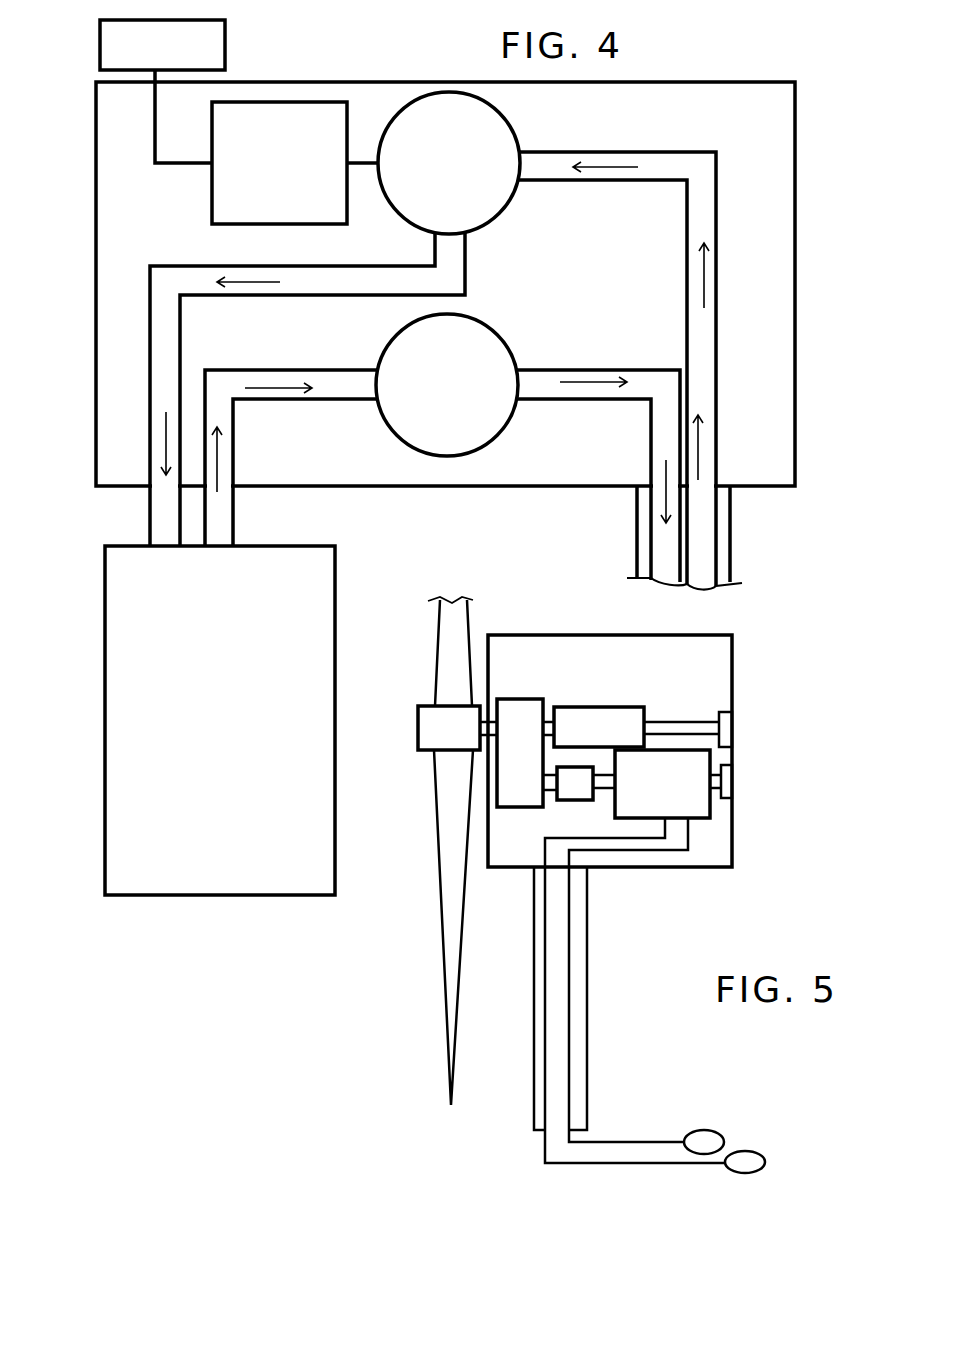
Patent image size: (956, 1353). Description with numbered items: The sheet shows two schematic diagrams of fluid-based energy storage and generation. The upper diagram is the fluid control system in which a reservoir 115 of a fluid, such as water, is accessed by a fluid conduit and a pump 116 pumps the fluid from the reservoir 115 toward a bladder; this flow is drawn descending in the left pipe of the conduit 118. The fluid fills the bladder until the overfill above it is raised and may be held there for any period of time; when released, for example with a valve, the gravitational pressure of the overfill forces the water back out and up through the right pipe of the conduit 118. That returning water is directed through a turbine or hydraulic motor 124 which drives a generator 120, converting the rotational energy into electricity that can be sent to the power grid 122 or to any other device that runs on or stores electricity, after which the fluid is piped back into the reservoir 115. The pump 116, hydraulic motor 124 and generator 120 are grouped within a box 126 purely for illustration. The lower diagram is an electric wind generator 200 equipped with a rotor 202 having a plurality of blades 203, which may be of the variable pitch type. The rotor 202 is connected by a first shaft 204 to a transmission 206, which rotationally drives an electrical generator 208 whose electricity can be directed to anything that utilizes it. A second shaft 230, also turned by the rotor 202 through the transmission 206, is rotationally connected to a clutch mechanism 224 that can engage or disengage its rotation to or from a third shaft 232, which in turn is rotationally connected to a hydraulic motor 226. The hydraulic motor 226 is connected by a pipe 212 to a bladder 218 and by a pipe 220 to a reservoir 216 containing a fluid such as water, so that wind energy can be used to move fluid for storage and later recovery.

In FIG. 4, the reservoir 115 is at (184, 721).
In FIG. 4, the pump 116 is at (423, 391).
In FIG. 4, the conduit 118 is at (637, 528).
In FIG. 4, the generator 120 is at (258, 168).
In FIG. 4, the power grid 122 is at (185, 59).
In FIG. 4, the hydraulic motor 124 is at (425, 175).
In FIG. 4, the box 126 is at (96, 253).
In FIG. 5, the electric wind generator 200 is at (700, 914).
In FIG. 5, the rotor 202 is at (430, 742).
In FIG. 5, the blades 203 is at (447, 659).
In FIG. 5, the first shaft 204 is at (490, 728).
In FIG. 5, the transmission 206 is at (503, 770).
In FIG. 5, the electrical generator 208 is at (637, 727).
In FIG. 5, the pipe 212 is at (534, 1066).
In FIG. 5, the reservoir 216 is at (706, 1140).
In FIG. 5, the bladder 218 is at (752, 1160).
In FIG. 5, the pipe 220 is at (570, 1022).
In FIG. 5, the clutch mechanism 224 is at (578, 787).
In FIG. 5, the hydraulic motor 226 is at (673, 784).
In FIG. 5, the second shaft 230 is at (551, 786).
In FIG. 5, the third shaft 232 is at (604, 783).